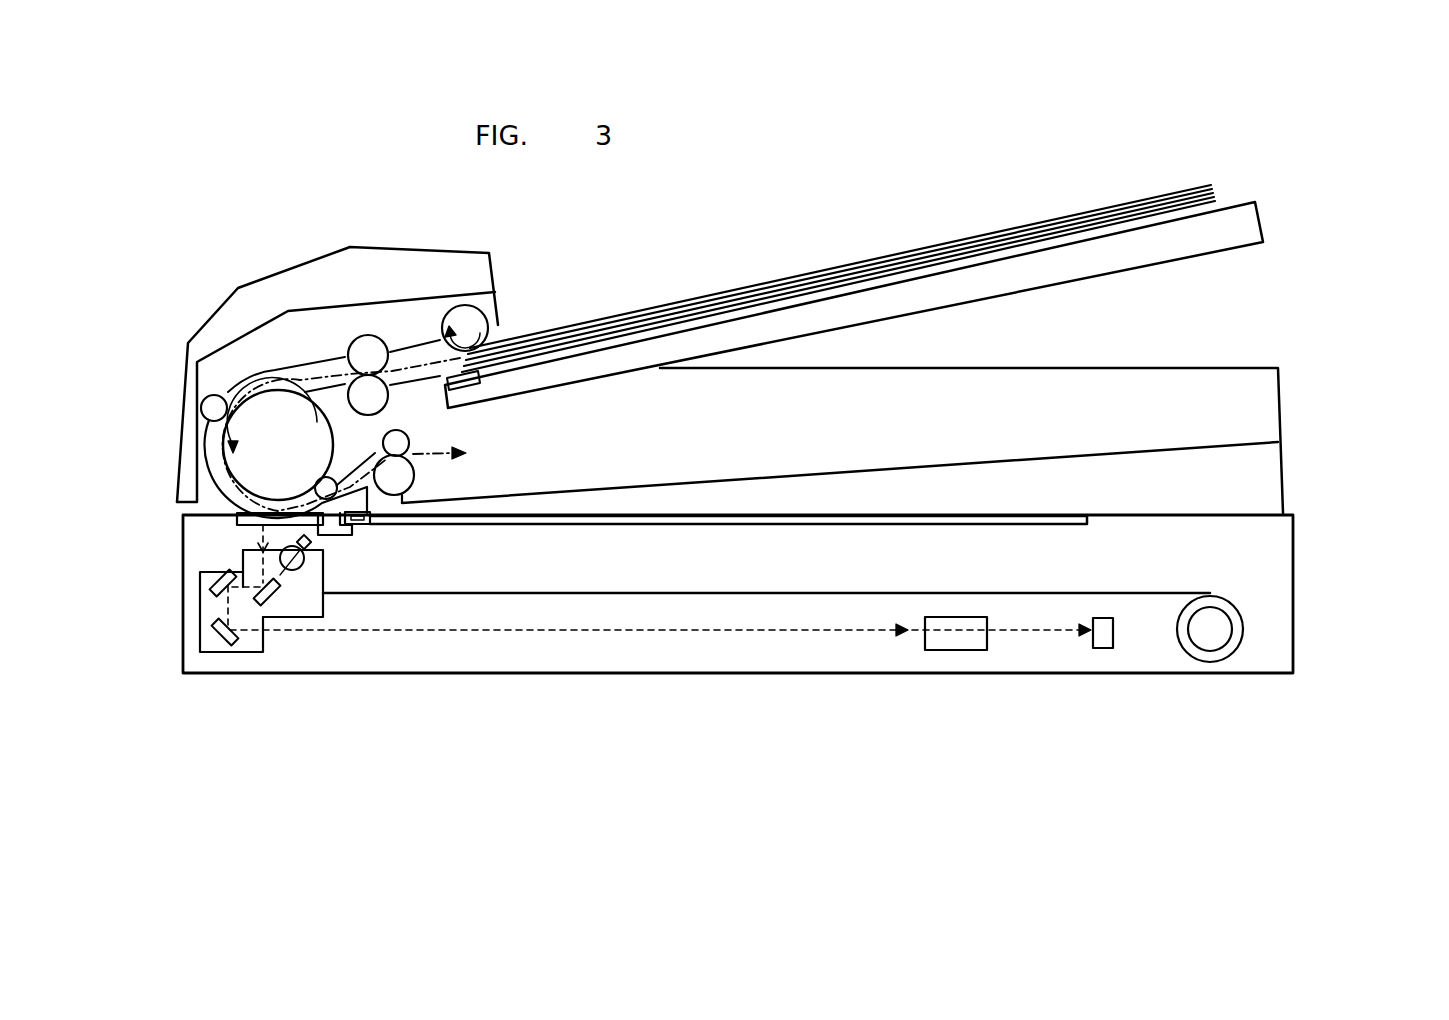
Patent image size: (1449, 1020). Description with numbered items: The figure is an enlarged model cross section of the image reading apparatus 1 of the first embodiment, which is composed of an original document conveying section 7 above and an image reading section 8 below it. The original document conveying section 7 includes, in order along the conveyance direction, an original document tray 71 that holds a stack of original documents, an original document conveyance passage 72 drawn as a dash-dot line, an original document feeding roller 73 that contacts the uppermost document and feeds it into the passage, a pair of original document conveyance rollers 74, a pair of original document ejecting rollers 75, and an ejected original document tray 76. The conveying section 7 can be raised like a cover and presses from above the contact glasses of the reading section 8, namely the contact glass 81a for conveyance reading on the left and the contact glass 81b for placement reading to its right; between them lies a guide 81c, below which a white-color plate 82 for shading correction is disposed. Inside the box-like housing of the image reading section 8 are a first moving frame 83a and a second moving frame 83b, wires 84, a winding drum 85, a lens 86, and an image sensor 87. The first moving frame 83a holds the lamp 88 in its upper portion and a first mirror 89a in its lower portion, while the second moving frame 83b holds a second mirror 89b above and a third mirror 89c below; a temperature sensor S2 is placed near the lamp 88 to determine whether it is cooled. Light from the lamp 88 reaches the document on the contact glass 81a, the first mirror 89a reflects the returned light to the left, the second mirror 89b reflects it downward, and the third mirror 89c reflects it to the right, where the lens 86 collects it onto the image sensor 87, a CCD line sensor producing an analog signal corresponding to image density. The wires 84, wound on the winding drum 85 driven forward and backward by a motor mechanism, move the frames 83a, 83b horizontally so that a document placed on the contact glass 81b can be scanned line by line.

The image reading apparatus 1 is at (1373, 407).
The original document conveying section 7 is at (1292, 421).
The image reading section 8 is at (1298, 619).
The original document tray 71 is at (1234, 220).
The original document conveyance passage 72 is at (233, 393).
The original document feeding roller 73 is at (475, 318).
The pair of original document conveyance rollers 74 is at (366, 356).
The pair of original document ejecting rollers 75 is at (406, 472).
The ejected original document tray 76 is at (700, 483).
The contact glass for conveyance reading 81a is at (235, 512).
The contact glass for placement reading 81b is at (853, 523).
The guide 81c is at (358, 510).
The white-color plate 82 is at (368, 522).
The first moving frame 83a is at (242, 558).
The second moving frame 83b is at (198, 637).
The wires 84 is at (963, 593).
The winding drum 85 is at (1218, 607).
The lens 86 is at (955, 640).
The image sensor 87 is at (1103, 645).
The lamp 88 is at (302, 561).
The first mirror 89a is at (280, 595).
The second mirror 89b is at (215, 578).
The third mirror 89c is at (225, 642).
The temperature sensor S2 is at (312, 545).